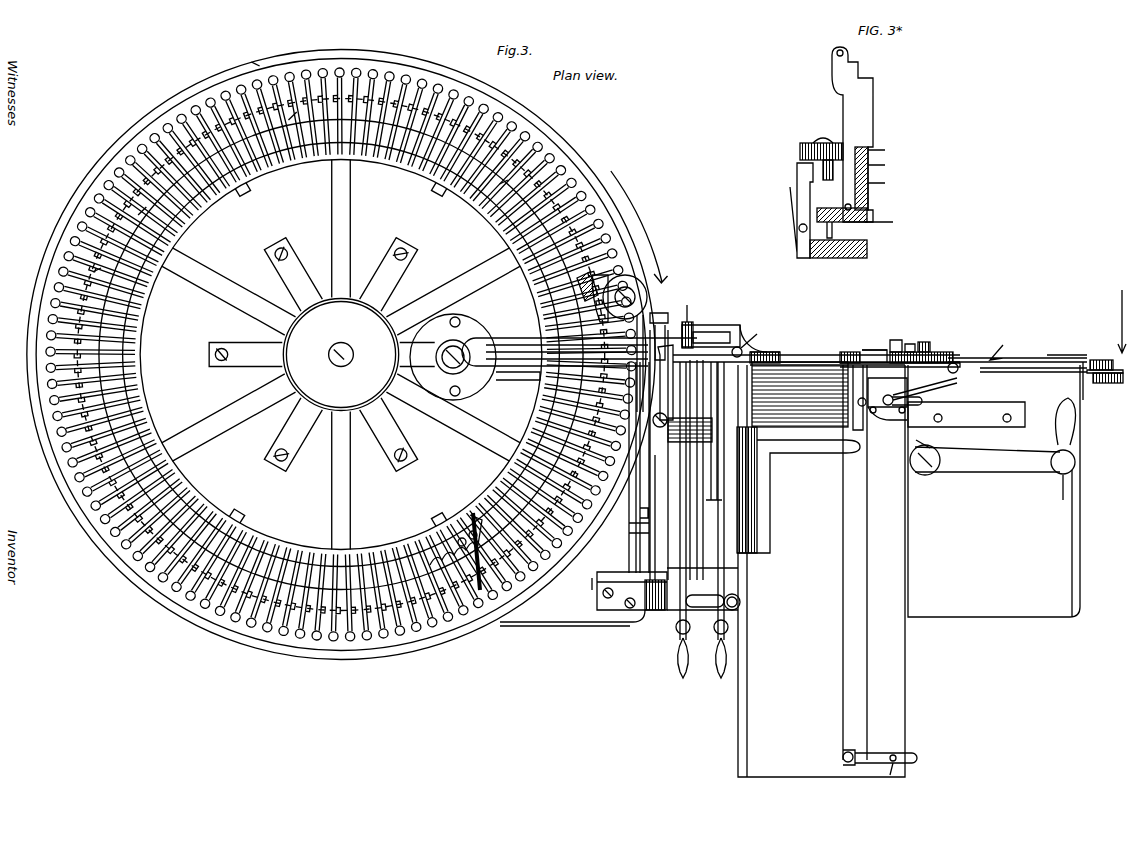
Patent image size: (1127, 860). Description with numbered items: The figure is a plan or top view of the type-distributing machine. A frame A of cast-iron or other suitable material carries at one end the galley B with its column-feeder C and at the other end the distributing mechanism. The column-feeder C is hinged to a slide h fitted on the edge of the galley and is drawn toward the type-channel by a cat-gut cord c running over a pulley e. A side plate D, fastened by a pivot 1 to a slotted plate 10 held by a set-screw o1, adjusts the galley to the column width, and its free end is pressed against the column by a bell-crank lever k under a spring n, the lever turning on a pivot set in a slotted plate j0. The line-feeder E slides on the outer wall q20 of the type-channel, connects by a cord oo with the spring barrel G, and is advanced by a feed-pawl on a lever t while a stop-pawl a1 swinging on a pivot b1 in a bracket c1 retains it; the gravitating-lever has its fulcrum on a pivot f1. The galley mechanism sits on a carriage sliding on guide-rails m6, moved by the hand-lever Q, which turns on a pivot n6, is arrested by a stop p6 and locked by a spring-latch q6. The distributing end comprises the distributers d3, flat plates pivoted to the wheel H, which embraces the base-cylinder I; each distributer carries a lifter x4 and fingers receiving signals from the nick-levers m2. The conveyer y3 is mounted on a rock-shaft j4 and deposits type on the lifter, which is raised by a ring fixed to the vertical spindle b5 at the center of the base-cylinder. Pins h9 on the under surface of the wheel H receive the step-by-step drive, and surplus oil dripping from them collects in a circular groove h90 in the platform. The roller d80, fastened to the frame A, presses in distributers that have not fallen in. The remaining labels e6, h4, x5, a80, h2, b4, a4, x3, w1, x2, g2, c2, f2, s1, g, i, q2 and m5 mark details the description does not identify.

In FIG. 3, the pins h9 is at (420, 70).
In FIG. 3, the key lever tabs e6 is at (309, 215).
In FIG. 3, the key lever stop h4 is at (336, 274).
The key lever stop h4 is at (855, 223).
In FIG. 3, the pawl x5 is at (580, 275).
In FIG. 3, the pulley e is at (255, 57).
In FIG. 3, the base-cylinder I is at (341, 355).
In FIG. 3, the vertical spindle b5 is at (340, 355).
In FIG. 3, the lifter x4 is at (460, 350).
In FIG. 3, the conveyer y3 is at (512, 336).
In FIG. 3, the rock-shaft j4 is at (520, 378).
In FIG. 3, the pivot stud a80 is at (625, 295).
In FIG. 3, the hanger rods h2 is at (676, 626).
In FIG. 3, the nick-levers m2 is at (653, 455).
In FIG. 3, the block b4 is at (659, 311).
In FIG. 3, the arm a4 is at (672, 342).
In FIG. 3, the bracket x3 is at (670, 382).
In FIG. 3, the screw rod w1 is at (682, 417).
In FIG. 3, the rod x2 is at (710, 431).
In FIG. 3, the rail g2 is at (688, 470).
In FIG. 3, the pivot f1 is at (711, 470).
In FIG. 3, the block c2 is at (724, 338).
In FIG. 3, the pin f2 is at (694, 313).
In FIG. 3, the link stud s1 is at (751, 341).
In FIG. 3, the outer wall of type-channel q20 is at (816, 351).
In FIG. 3, the line-feeder E is at (794, 343).
In FIG. 3, the pivot b1 is at (897, 339).
In FIG. 3, the stop-pawl a1 is at (874, 342).
In FIG. 3, the bracket c1 is at (910, 341).
In FIG. 3, the lever t is at (928, 342).
In FIG. 3, the bar g is at (1017, 358).
In FIG. 3, the cord oo is at (1058, 369).
In FIG. 3, the barrel G is at (1107, 340).
In FIG. 3, the cat-gut cord c is at (790, 394).
In FIG. 3, the slide h is at (747, 490).
In FIG. 3, the column-feeder C is at (798, 495).
In FIG. 3, the galley B is at (821, 571).
In FIG. 3, the side plate D is at (855, 565).
In FIG. 3, the pivot 1 is at (848, 747).
In FIG. 3, the slotted plate 10 is at (892, 748).
In FIG. 3, the set-screw o1 is at (886, 780).
In FIG. 3, the frame A is at (995, 489).
The frame A is at (845, 249).
In FIG. 3, the hand-lever Q is at (993, 436).
In FIG. 3, the pivot n6 is at (926, 449).
In FIG. 3, the spring-latch q6 is at (1070, 500).
In FIG. 3, the guide-rails m6 is at (966, 412).
In FIG. 3, the bell-crank lever k is at (880, 397).
In FIG. 3, the spring n is at (920, 391).
In FIG. 3, the pin i is at (861, 395).
In FIG. 3, the slotted plate j0 is at (901, 402).
In FIG. 3, the block q2 is at (628, 572).
In FIG. 3, the stop p6 is at (619, 598).
In FIG. 3, the slotted plate m5 is at (703, 589).
The distributer d3 is at (852, 134).
The distributer-wheel H is at (872, 178).
The roller d80 is at (816, 155).
The circular groove h90 is at (818, 258).